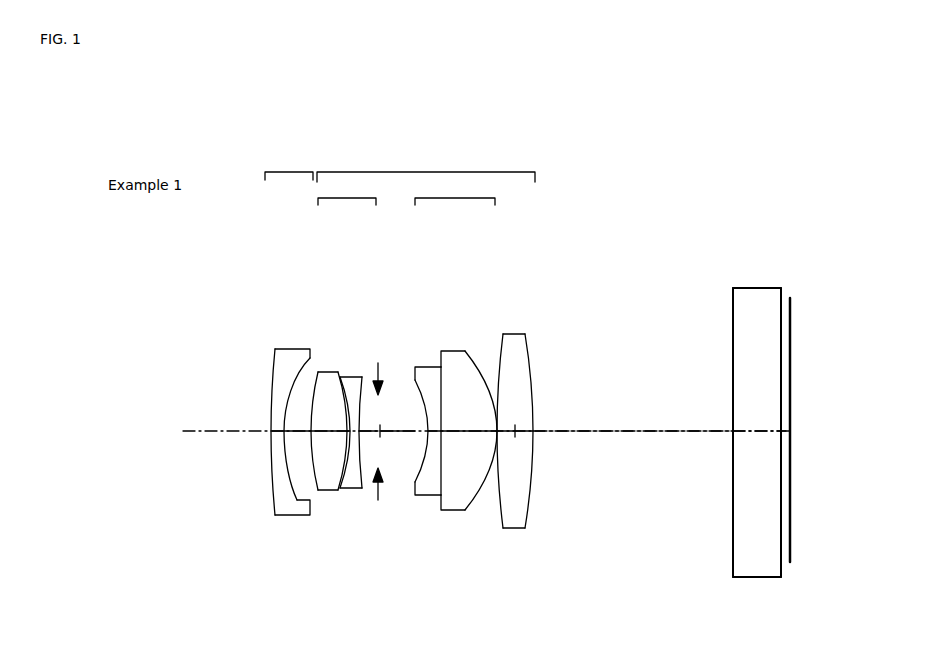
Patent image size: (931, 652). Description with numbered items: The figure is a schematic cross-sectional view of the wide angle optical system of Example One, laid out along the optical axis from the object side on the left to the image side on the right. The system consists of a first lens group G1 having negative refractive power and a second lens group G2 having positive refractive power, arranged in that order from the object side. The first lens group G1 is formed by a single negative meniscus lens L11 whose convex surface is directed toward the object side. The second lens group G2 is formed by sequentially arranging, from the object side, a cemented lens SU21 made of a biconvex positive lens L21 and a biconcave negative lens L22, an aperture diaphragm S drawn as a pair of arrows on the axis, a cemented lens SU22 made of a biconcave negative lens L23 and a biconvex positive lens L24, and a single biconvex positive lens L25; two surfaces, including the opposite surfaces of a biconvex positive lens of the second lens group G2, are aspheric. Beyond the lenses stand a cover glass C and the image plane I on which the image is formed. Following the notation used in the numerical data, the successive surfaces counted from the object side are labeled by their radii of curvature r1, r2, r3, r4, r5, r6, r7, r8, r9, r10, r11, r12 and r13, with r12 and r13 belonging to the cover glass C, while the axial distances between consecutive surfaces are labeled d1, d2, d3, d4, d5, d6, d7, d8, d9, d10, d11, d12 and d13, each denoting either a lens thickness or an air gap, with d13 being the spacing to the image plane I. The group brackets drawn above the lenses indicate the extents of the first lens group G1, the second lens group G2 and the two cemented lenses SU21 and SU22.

The first lens group G1 is at (289, 167).
The second lens group G2 is at (426, 168).
The cemented lens SU21 is at (347, 192).
The cemented lens SU22 is at (455, 192).
The negative meniscus lens L11 is at (278, 364).
The biconvex positive lens L21 is at (326, 351).
The biconcave negative lens L22 is at (369, 350).
The biconcave negative lens L23 is at (432, 354).
The biconvex positive lens L24 is at (469, 361).
The single biconvex positive lens L25 is at (517, 370).
The aperture diaphragm S is at (380, 490).
The cover glass C is at (750, 425).
The image plane I is at (791, 498).
The radius of curvature of lens surface r1 is at (272, 372).
The radius of curvature of lens surface r2 is at (284, 360).
The radius of curvature of lens surface r3 is at (313, 370).
The radius of curvature of lens surface r4 is at (338, 362).
The radius of curvature of lens surface r5 is at (362, 376).
The radius of curvature of lens surface r6 is at (380, 362).
The radius of curvature of lens surface r7 is at (419, 378).
The radius of curvature of lens surface r8 is at (430, 380).
The radius of curvature of lens surface r9 is at (460, 378).
The radius of curvature of lens surface r10 is at (497, 362).
The radius of curvature of lens surface r11 is at (531, 360).
The radius of curvature of lens surface r12 is at (733, 313).
The radius of curvature of lens surface r13 is at (781, 307).
The lens thickness d1 is at (282, 431).
The air gap d2 is at (296, 431).
The lens thickness d3 is at (329, 443).
The lens thickness d4 is at (349, 431).
The air gap d5 is at (366, 431).
The air gap d6 is at (397, 443).
The lens thickness d7 is at (433, 431).
The lens thickness d8 is at (468, 443).
The air gap d9 is at (496, 431).
The lens thickness d10 is at (515, 431).
The air gap d11 is at (633, 443).
The lens thickness d12 is at (757, 443).
The air gap d13 is at (784, 431).